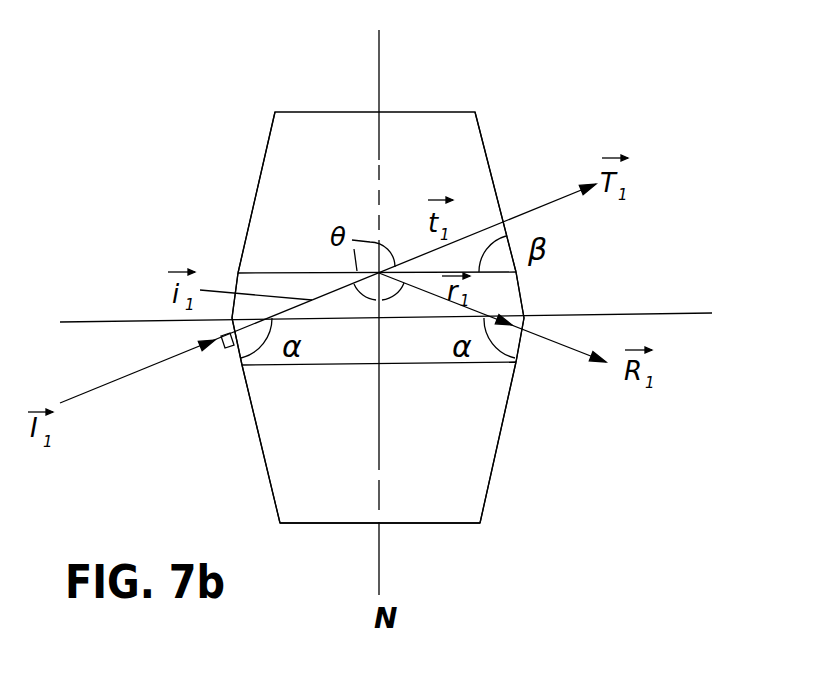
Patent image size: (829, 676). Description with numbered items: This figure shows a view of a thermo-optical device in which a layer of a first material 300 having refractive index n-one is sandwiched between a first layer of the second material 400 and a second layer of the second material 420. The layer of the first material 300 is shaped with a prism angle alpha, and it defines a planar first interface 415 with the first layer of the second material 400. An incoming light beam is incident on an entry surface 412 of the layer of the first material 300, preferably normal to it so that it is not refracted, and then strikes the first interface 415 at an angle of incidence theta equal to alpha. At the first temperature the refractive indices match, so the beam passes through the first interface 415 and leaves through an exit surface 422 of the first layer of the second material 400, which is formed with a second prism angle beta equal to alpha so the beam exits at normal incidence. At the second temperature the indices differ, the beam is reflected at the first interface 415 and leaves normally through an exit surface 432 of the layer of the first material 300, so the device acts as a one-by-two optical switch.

The first layer of the second material 400 is at (470, 140).
The exit surface 422 is at (491, 148).
The first interface 415 is at (237, 273).
The layer of a first material 300 is at (513, 297).
The entry surface 412 is at (222, 348).
The exit surface 432 is at (523, 345).
The second layer of the second material 420 is at (428, 500).